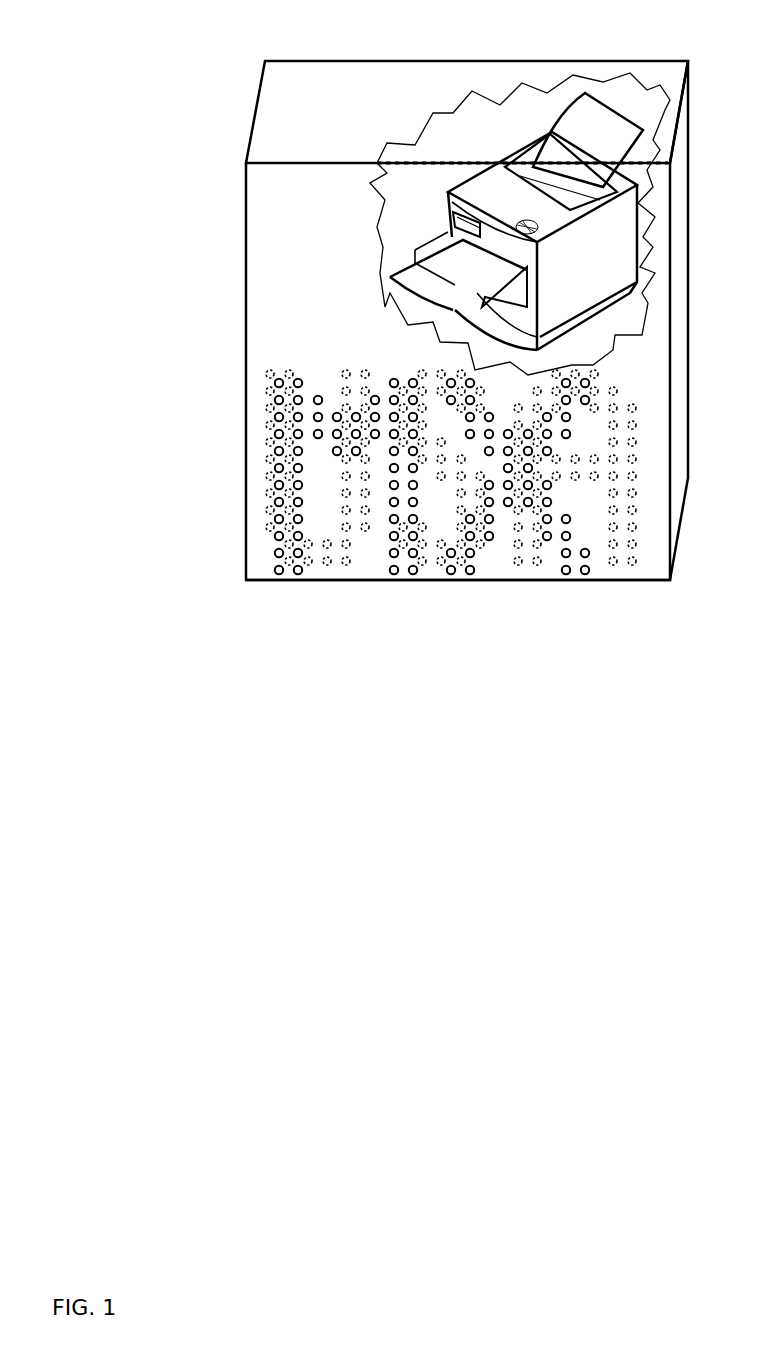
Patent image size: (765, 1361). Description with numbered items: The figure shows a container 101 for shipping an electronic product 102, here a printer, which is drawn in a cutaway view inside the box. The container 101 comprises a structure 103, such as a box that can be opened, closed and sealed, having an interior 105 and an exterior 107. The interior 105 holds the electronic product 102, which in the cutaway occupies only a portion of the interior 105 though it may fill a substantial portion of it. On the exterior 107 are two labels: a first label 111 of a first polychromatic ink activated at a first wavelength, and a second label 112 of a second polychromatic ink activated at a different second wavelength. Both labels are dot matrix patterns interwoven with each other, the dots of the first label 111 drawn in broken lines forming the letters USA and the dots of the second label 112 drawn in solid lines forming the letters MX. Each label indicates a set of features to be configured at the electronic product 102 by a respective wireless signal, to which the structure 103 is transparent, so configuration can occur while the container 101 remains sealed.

The container 101 is at (208, 80).
The electronic product 102 is at (520, 147).
The structure 103 is at (246, 211).
The interior 105 is at (433, 202).
The exterior 107 is at (320, 202).
The first label 111 is at (634, 566).
The second label 112 is at (585, 576).